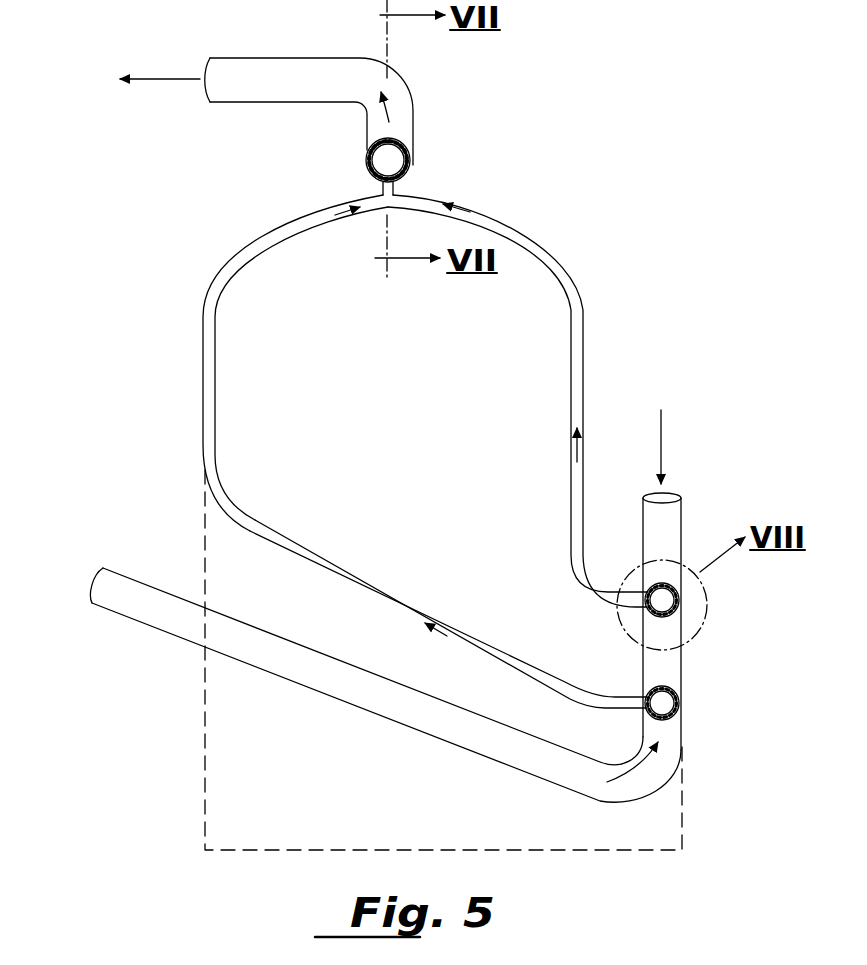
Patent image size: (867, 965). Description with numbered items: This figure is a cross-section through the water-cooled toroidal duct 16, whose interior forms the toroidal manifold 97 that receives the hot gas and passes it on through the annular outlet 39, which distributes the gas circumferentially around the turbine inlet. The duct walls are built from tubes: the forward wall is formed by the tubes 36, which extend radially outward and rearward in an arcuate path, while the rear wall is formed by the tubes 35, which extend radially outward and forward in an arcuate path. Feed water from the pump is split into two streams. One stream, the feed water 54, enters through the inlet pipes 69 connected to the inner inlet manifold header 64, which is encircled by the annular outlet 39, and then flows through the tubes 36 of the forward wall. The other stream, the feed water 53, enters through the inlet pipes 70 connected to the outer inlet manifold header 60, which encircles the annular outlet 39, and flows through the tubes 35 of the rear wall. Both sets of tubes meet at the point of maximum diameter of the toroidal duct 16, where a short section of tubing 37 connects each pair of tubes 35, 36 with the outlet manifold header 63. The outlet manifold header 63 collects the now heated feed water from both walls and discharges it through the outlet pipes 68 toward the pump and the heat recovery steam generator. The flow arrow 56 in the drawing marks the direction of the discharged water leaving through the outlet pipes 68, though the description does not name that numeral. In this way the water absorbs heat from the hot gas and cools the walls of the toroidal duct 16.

The toroidal duct 16 is at (343, 433).
The tubes 35 is at (578, 332).
The tubes 36 is at (208, 388).
The short section of tubing 37 is at (395, 191).
The annular outlet 39 is at (686, 672).
The feed water stream 53 is at (658, 432).
The feed water stream 54 is at (458, 637).
The outlet flow 56 is at (173, 82).
The outer inlet manifold header 60 is at (680, 603).
The outlet manifold header 63 is at (413, 162).
The inner inlet manifold header 64 is at (680, 710).
The outlet pipes 68 is at (297, 93).
The inlet pipes 69 is at (165, 622).
The inlet pipes 70 is at (673, 515).
The toroidal manifold 97 is at (412, 415).